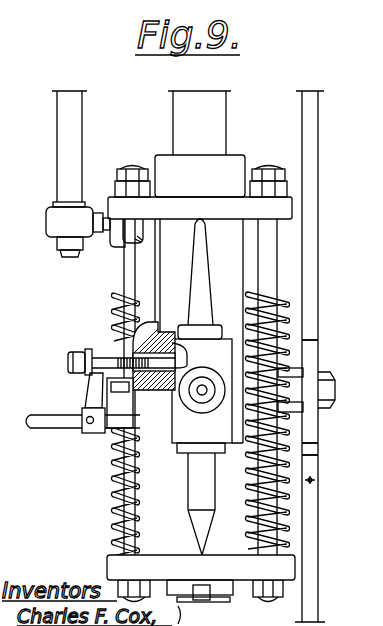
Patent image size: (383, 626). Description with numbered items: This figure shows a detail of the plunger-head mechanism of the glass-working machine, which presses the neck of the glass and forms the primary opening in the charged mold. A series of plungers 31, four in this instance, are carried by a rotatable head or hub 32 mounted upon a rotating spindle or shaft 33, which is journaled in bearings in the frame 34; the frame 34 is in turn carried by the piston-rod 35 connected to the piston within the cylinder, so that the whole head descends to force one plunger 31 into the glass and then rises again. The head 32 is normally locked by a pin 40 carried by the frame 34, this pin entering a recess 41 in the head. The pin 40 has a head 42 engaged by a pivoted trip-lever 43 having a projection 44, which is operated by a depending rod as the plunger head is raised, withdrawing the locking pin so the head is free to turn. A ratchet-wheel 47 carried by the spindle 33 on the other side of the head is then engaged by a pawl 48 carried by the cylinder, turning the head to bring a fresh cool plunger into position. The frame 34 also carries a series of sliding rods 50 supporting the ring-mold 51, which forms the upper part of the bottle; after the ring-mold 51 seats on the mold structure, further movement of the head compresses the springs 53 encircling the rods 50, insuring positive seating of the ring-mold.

The plunger 31 is at (182, 482).
The rotatable head or hub 32 is at (202, 391).
The rotating spindle or shaft 33 is at (335, 392).
The frame 34 is at (250, 270).
The piston-rod 35 is at (200, 144).
The pin 40 is at (152, 383).
The recess 41 is at (173, 325).
The head 42 is at (88, 350).
The trip-lever 43 is at (80, 403).
The projection 44 is at (55, 425).
The ratchet-wheel 47 is at (312, 357).
The pawl 48 is at (313, 275).
The sliding rods 50 is at (123, 271).
The ring-mold 51 is at (225, 597).
The springs 53 is at (118, 465).